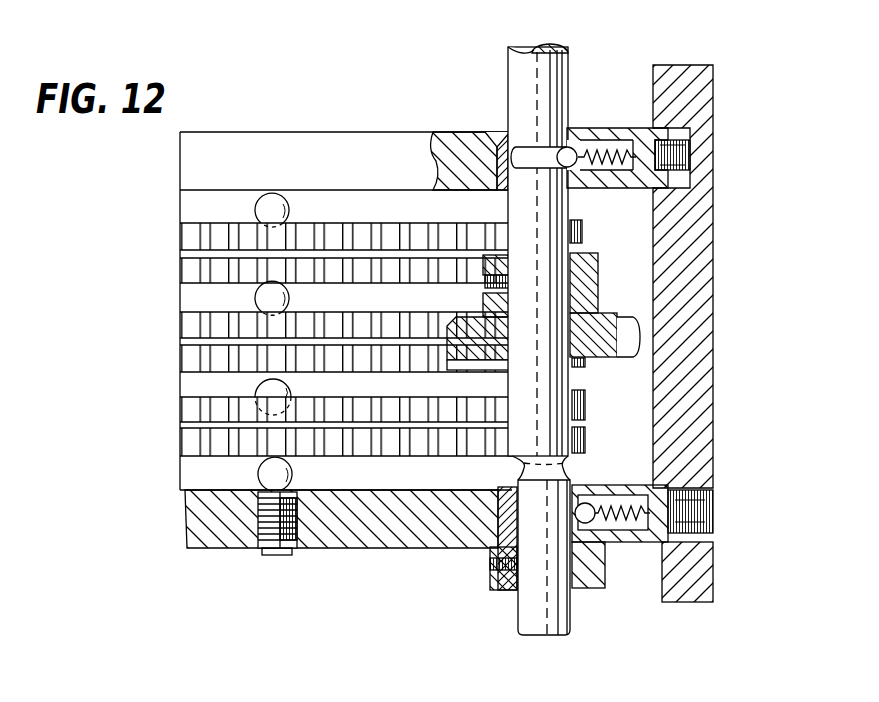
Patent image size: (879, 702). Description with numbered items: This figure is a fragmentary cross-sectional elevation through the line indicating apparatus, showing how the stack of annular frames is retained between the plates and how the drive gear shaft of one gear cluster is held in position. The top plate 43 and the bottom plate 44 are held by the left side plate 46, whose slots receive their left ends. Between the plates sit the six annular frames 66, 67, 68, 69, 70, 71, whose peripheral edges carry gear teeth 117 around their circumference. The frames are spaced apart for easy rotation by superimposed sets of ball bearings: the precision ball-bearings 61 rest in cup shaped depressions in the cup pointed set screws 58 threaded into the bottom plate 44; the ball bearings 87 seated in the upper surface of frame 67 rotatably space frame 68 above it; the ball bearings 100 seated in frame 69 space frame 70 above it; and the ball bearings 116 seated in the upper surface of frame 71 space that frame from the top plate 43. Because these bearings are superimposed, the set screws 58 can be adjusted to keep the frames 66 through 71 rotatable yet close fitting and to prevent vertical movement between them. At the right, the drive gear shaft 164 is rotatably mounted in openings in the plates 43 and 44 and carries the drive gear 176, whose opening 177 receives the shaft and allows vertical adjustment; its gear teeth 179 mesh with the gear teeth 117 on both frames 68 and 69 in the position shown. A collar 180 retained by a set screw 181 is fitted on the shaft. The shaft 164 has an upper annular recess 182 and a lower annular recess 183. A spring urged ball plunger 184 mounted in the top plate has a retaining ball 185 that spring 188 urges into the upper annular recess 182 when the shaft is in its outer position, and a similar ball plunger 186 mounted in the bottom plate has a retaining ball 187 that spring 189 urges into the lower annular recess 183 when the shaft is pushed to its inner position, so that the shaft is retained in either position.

The top plate 43 is at (336, 167).
The bottom plate 44 is at (374, 550).
The left side plate 46 is at (716, 318).
The cup pointed set screws 58 is at (260, 540).
The precision ball-bearings 61 is at (292, 476).
The annular frame 66 is at (180, 448).
The annular frame 67 is at (180, 412).
The annular frame 68 is at (180, 362).
The annular frame 69 is at (180, 325).
The annular frame 70 is at (179, 272).
The annular frame 71 is at (180, 232).
The ball bearings 87 is at (291, 382).
The ball bearings 100 is at (290, 297).
The ball bearings 116 is at (290, 208).
The gear teeth 117 is at (180, 341).
The drive gear shaft 164 is at (562, 46).
The drive gear 176 is at (598, 266).
The opening 177 is at (572, 305).
The gear teeth 179 is at (632, 347).
The collar 180 is at (492, 588).
The set screw 181 is at (490, 565).
The upper annular recess 182 is at (488, 132).
The lower annular recess 183 is at (520, 468).
The spring urged ball plunger 184 is at (633, 128).
The retaining ball 185 is at (585, 189).
The ball plunger 186 is at (616, 546).
The retaining ball 187 is at (593, 492).
The spring 188 is at (607, 148).
The spring 189 is at (630, 527).